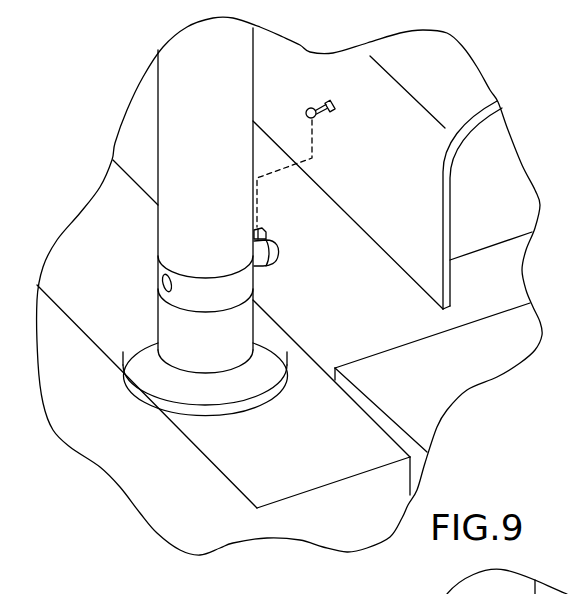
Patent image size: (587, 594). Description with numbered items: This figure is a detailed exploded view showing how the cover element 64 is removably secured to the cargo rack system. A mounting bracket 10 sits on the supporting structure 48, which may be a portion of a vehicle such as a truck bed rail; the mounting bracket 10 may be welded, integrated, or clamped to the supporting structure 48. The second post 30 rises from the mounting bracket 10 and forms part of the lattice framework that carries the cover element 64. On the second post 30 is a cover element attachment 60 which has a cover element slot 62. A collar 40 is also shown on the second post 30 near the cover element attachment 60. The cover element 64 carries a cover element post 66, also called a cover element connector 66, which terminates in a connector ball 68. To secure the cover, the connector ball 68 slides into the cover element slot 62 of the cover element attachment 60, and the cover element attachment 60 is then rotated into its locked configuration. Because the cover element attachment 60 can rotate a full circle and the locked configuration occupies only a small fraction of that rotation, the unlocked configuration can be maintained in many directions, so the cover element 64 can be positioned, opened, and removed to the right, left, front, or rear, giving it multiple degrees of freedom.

The mounting bracket 10 is at (227, 400).
The second post 30 is at (172, 63).
The collar 40 is at (237, 277).
The supporting structure 48 is at (300, 490).
The cover element attachment 60 is at (270, 263).
The cover element slot 62 is at (272, 243).
The cover element 64 is at (458, 70).
The cover element post 66 is at (323, 116).
The connector ball 68 is at (312, 107).